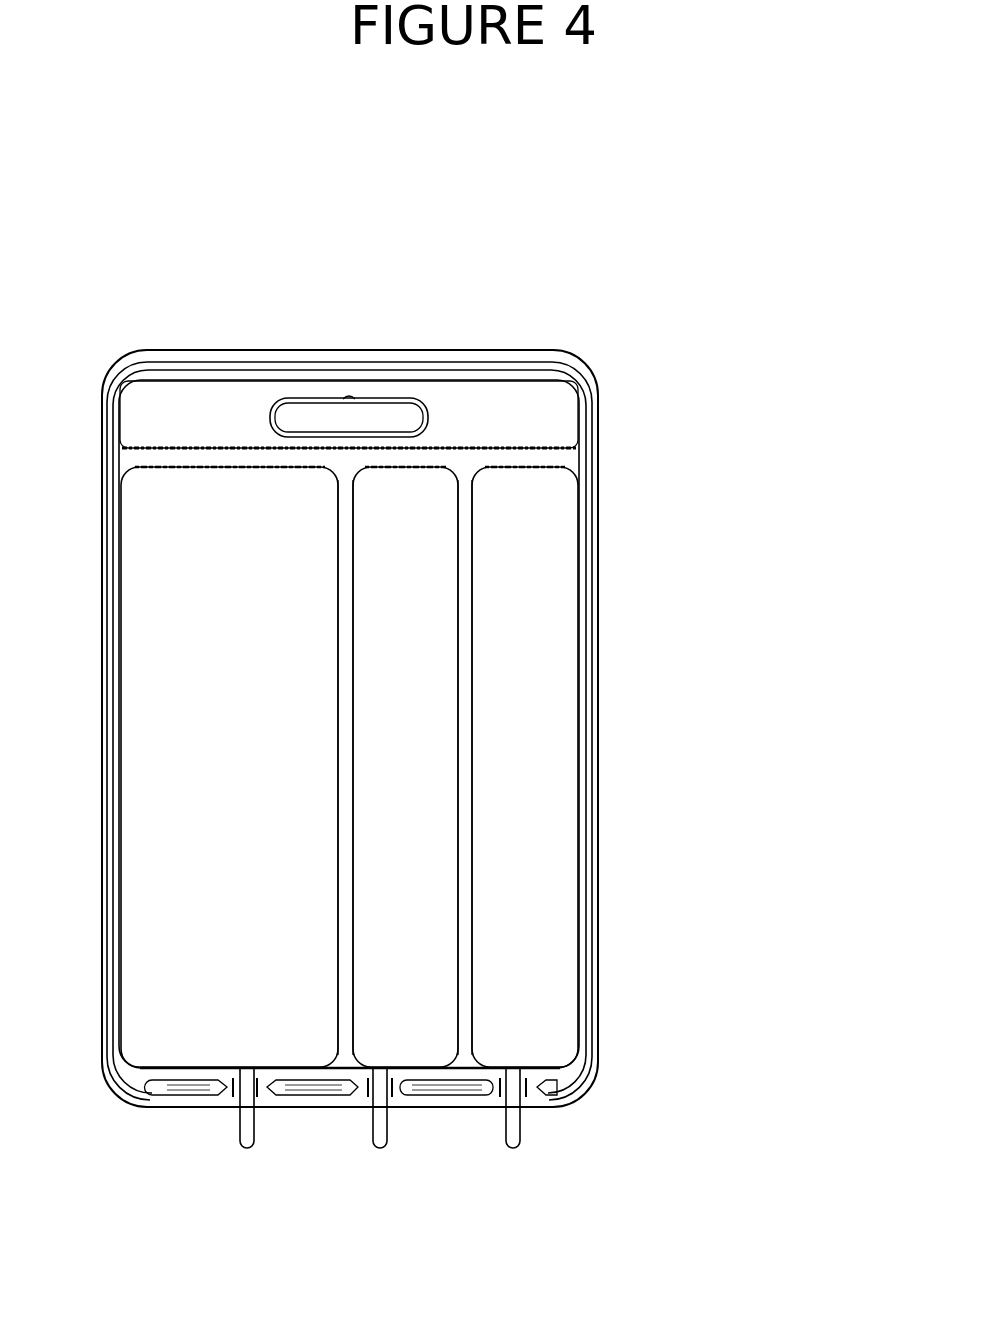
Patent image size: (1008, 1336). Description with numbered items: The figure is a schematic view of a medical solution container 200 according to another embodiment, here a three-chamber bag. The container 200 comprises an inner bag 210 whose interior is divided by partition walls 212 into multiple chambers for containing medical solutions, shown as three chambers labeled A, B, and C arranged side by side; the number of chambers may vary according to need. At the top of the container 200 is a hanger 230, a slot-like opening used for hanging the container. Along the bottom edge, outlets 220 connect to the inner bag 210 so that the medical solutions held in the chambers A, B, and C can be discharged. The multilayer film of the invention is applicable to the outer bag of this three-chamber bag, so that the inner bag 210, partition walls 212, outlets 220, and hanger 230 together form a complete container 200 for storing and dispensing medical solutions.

The container 200 is at (479, 736).
The inner bag 210 is at (555, 960).
The partition wall 212 is at (462, 853).
The outlet 220 is at (520, 1130).
The hanger 230 is at (377, 398).